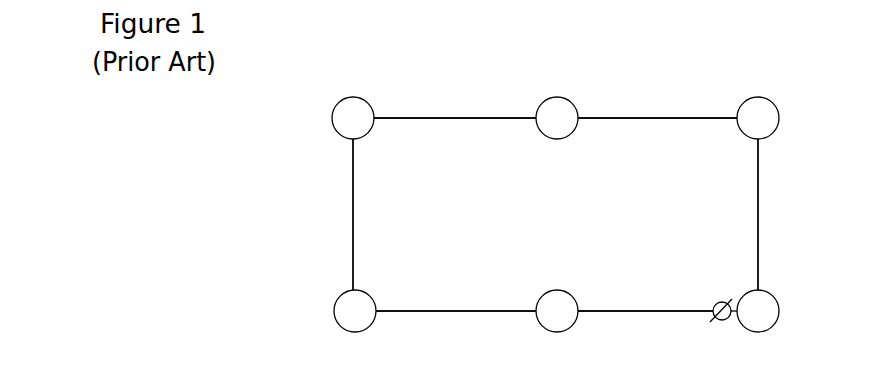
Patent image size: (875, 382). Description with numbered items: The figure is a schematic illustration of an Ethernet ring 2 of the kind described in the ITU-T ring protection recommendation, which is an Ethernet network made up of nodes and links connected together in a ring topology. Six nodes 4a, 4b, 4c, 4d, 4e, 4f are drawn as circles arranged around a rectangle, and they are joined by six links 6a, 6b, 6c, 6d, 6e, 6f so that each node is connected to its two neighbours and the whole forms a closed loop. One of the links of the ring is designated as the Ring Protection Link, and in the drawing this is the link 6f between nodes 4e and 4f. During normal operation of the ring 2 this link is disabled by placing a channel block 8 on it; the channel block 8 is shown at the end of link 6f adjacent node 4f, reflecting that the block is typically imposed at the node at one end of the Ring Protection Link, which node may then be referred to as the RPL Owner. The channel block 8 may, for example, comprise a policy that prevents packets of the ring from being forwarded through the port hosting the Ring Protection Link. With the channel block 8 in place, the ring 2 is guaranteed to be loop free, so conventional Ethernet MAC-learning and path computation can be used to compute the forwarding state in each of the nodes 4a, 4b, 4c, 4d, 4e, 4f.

The Ethernet ring 2 is at (490, 60).
The node 4a is at (366, 100).
The node 4b is at (573, 100).
The node 4c is at (775, 105).
The node 4d is at (360, 331).
The node 4e is at (565, 331).
The node 4f is at (770, 327).
The link 6a is at (424, 117).
The link 6b is at (628, 117).
The link 6c is at (352, 215).
The link 6d is at (759, 218).
The link 6e is at (443, 313).
The link 6f is at (640, 313).
The channel block 8 is at (715, 302).